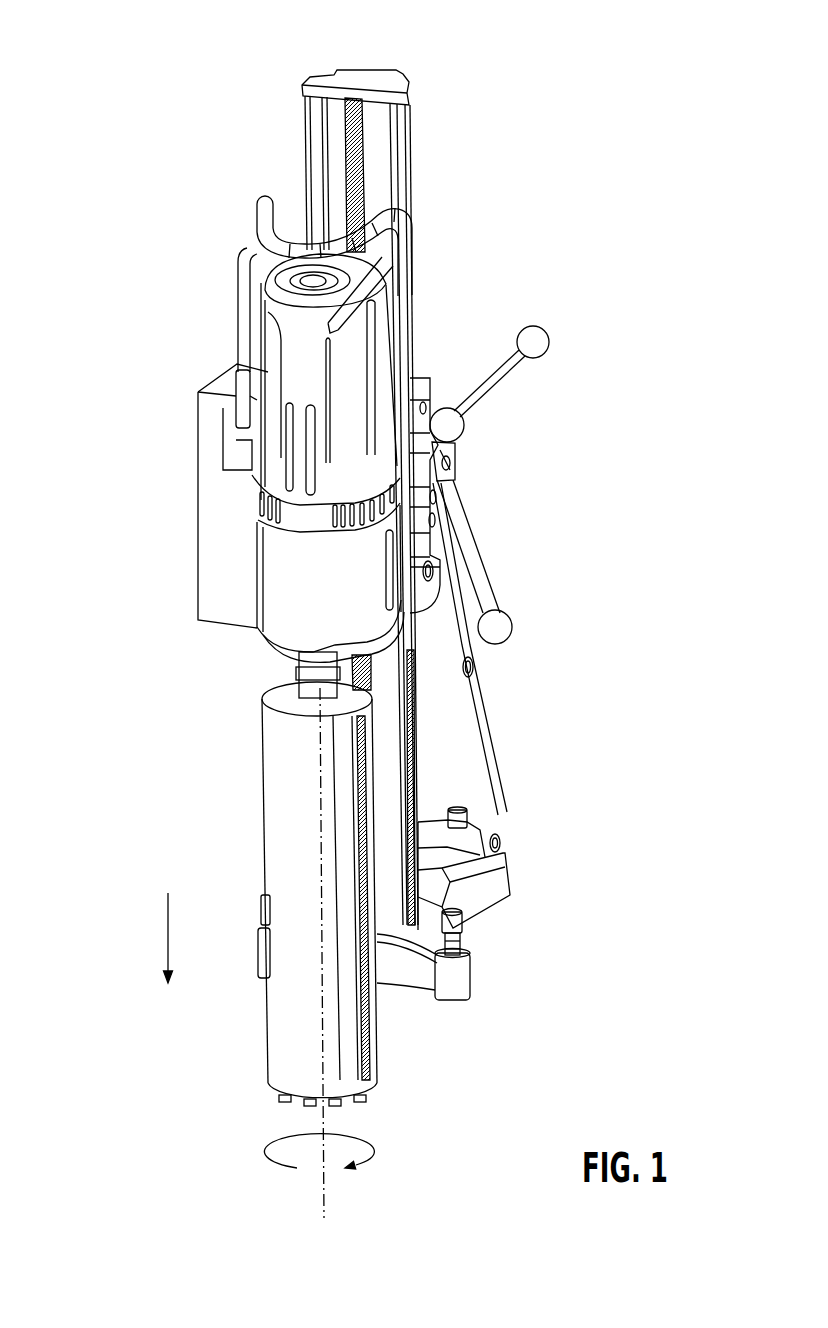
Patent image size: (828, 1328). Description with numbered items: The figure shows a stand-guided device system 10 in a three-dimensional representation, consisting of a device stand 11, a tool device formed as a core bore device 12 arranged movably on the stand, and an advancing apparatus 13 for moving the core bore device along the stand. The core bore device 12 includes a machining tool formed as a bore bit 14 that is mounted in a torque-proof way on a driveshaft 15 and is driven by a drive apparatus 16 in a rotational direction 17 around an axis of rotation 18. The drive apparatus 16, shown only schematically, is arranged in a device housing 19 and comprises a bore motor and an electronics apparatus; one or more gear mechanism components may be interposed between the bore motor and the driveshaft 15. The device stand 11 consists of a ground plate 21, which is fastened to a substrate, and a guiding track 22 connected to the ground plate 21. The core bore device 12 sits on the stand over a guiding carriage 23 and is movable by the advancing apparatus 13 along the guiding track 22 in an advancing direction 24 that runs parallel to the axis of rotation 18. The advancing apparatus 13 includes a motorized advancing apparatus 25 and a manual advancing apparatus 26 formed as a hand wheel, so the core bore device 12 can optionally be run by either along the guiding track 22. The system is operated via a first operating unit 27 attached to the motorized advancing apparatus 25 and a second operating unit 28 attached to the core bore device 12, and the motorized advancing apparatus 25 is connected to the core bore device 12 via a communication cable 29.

The stand-guided device system 10 is at (183, 147).
The device stand 11 is at (513, 701).
The core bore device 12 is at (369, 291).
The advancing apparatus 13 is at (547, 469).
The bore bit 14 is at (290, 818).
The driveshaft 15 is at (308, 680).
The drive apparatus 16 is at (287, 473).
The rotational direction 17 is at (270, 1148).
The axis of rotation 18 is at (322, 1194).
The device housing 19 is at (347, 571).
The ground plate 21 is at (403, 960).
The guiding track 22 is at (379, 125).
The guiding carriage 23 is at (437, 376).
The advancing direction 24 is at (165, 937).
The motorized advancing apparatus 25 is at (196, 375).
The manual advancing apparatus 26 is at (466, 456).
The first operating unit 27 is at (221, 368).
The second operating unit 28 is at (296, 220).
The communication cable 29 is at (242, 283).